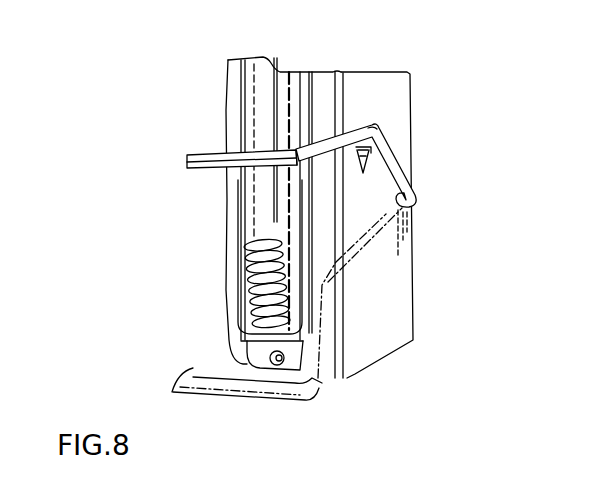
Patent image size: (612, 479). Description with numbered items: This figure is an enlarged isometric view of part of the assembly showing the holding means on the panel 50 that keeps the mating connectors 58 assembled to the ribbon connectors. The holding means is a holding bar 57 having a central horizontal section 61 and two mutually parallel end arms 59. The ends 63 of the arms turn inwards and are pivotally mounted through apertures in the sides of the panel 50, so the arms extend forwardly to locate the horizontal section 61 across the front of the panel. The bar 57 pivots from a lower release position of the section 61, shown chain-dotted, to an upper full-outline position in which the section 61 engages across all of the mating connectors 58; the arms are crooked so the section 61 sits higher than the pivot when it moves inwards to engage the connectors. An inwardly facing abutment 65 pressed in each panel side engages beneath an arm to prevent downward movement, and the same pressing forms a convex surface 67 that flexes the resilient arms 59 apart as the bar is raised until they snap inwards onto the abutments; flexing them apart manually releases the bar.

The panel 50 is at (353, 380).
The holding bar 57 is at (208, 171).
The mating connectors 58 is at (257, 247).
The end arms 59 is at (350, 133).
The central horizontal section 61 is at (188, 156).
The ends of the arms 63 is at (390, 143).
The abutment 65 is at (359, 164).
The convex surface 67 is at (365, 161).